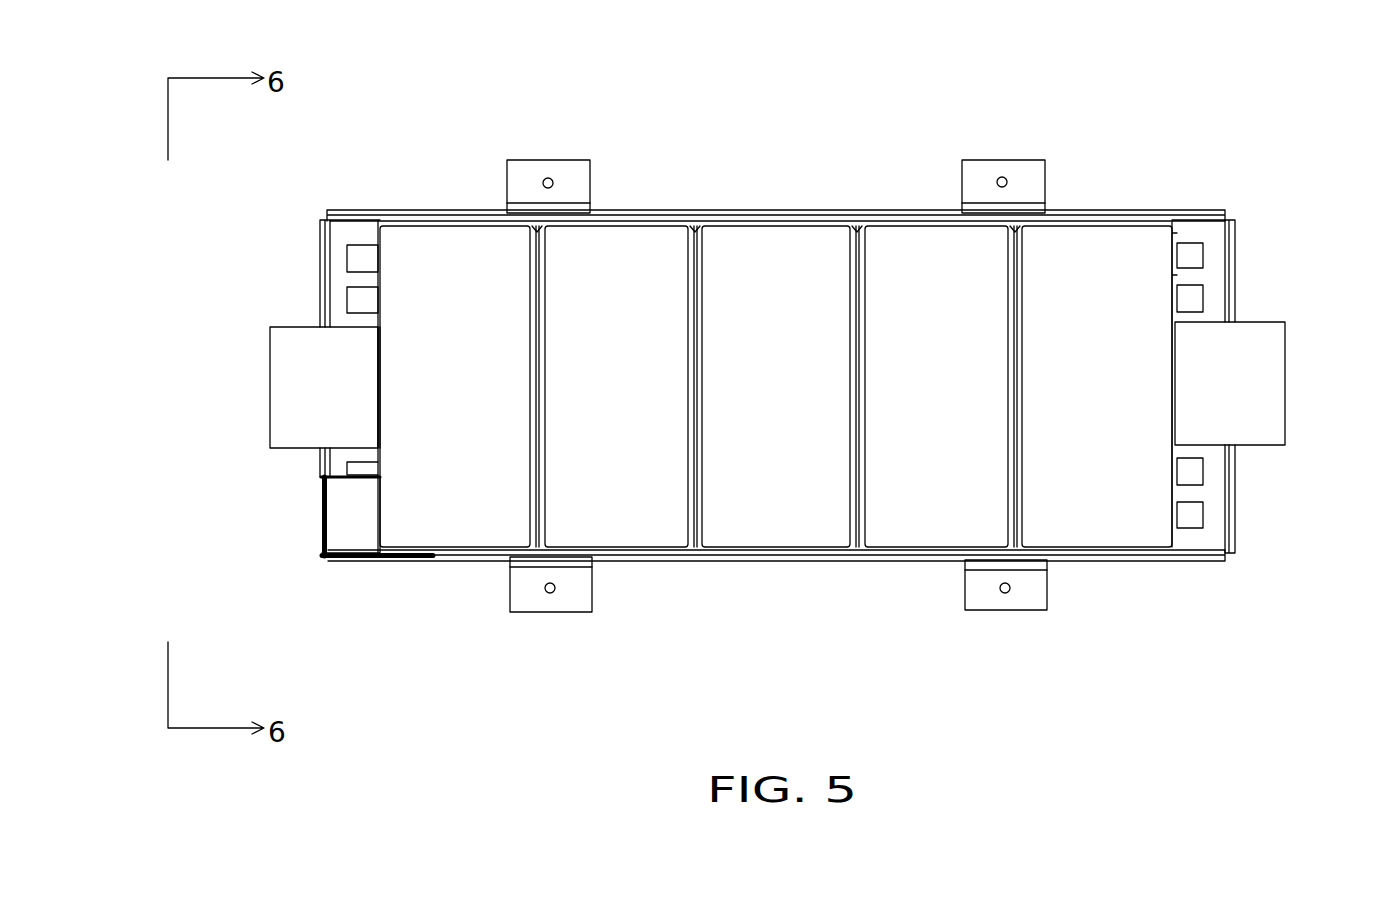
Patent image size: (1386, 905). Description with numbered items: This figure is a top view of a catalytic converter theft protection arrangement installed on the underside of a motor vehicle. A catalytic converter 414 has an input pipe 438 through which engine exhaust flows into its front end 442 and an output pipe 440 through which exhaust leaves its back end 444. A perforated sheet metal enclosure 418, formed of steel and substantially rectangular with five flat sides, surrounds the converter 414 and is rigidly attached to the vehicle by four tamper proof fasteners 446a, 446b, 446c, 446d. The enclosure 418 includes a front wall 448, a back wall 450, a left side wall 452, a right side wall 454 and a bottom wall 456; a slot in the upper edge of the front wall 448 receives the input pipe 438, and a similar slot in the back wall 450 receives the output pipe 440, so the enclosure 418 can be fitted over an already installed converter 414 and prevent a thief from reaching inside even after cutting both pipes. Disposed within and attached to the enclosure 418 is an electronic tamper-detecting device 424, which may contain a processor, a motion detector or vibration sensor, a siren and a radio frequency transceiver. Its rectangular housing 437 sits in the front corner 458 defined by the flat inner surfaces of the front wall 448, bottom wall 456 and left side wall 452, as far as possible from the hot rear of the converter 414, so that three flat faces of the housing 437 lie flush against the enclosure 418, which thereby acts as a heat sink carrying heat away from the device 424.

The catalytic converter 414 is at (797, 412).
The perforated sheet metal enclosure 418 is at (1207, 560).
The electronic tamper-detecting device 424 is at (357, 540).
The housing 437 is at (327, 513).
The input pipe 438 is at (307, 398).
The output pipe 440 is at (1259, 403).
The front end 442 is at (373, 418).
The back end 444 is at (1175, 233).
The tamper proof fastener 446a is at (548, 593).
The tamper proof fastener 446b is at (1003, 593).
The tamper proof fastener 446c is at (1006, 182).
The tamper proof fastener 446d is at (552, 183).
The front wall 448 is at (318, 265).
The back wall 450 is at (1177, 275).
The left side wall 452 is at (795, 562).
The right side wall 454 is at (788, 212).
The bottom wall 456 is at (350, 233).
The front corner 458 is at (328, 550).